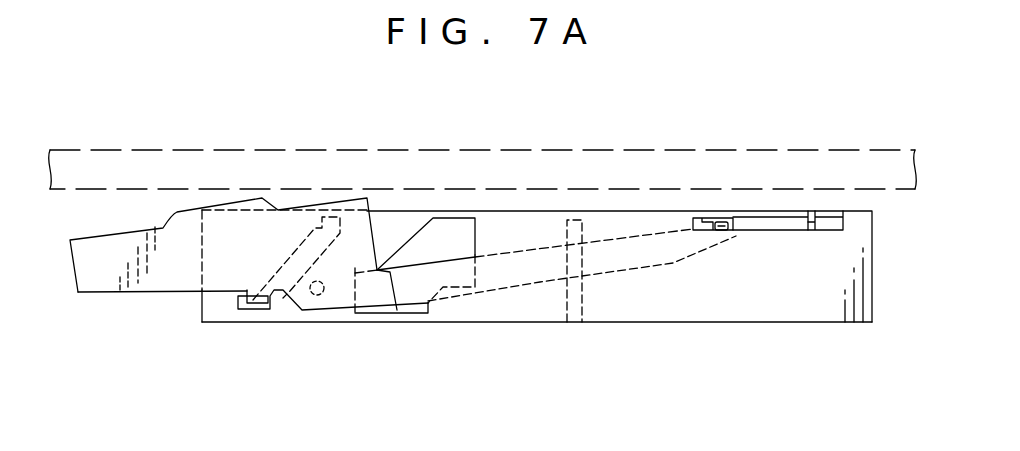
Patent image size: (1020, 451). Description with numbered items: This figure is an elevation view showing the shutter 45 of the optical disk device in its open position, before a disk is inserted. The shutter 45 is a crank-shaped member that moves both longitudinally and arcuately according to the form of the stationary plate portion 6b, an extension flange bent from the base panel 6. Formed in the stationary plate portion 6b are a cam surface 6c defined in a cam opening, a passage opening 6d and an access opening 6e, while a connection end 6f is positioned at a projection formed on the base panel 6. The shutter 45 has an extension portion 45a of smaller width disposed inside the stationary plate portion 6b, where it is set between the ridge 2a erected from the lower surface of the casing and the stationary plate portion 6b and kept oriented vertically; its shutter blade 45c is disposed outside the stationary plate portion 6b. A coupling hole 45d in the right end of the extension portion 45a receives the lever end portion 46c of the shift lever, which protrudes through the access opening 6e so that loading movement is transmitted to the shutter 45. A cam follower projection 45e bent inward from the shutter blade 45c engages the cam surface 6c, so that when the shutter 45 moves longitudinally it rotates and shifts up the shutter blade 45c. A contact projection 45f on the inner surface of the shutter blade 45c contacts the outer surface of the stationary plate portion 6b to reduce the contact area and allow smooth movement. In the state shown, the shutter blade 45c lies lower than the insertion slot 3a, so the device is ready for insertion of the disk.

The insertion slot 3a is at (455, 151).
The shutter 45 is at (98, 292).
The shutter blade 45c is at (176, 273).
The extension portion 45a is at (637, 253).
The coupling hole 45d is at (713, 218).
The cam follower projection 45e is at (262, 303).
The contact projection 45f is at (324, 291).
The lever end portion 46c is at (722, 221).
The base panel 6 is at (813, 323).
The stationary plate portion 6b is at (683, 302).
The cam surface 6c is at (271, 306).
The passage opening 6d is at (450, 220).
The access opening 6e is at (755, 223).
The connection end 6f is at (812, 231).
The ridge 2a is at (573, 312).